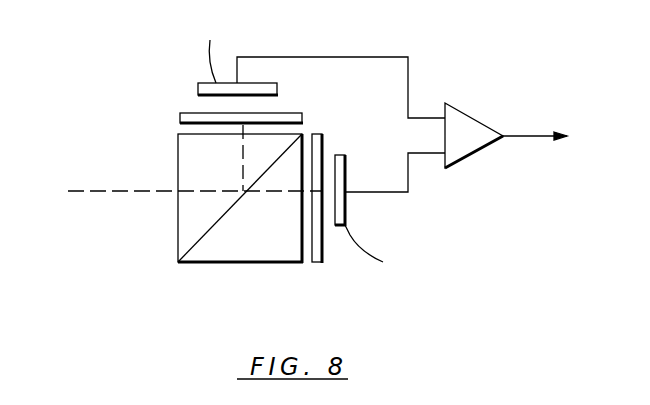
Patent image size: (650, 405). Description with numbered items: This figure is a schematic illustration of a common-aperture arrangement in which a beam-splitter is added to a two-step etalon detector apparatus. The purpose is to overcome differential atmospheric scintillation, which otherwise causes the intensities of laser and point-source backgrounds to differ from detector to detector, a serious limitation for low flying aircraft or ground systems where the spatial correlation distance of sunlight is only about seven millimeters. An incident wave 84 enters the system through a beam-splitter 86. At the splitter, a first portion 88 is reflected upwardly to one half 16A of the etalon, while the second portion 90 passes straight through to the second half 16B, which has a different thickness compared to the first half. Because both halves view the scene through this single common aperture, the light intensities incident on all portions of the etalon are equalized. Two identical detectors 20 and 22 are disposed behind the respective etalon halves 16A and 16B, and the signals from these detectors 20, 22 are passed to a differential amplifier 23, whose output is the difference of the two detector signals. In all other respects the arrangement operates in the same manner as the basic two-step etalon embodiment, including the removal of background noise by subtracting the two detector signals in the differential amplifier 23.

The detector 20 is at (199, 88).
The first half of the etalon 16A is at (180, 118).
The beam-splitter 86 is at (212, 262).
The second portion 90 is at (267, 192).
The first portion 88 is at (243, 163).
The incident wave 84 is at (100, 193).
The second half of the etalon 16B is at (325, 262).
The detector 22 is at (345, 205).
The differential amplifier 23 is at (475, 112).